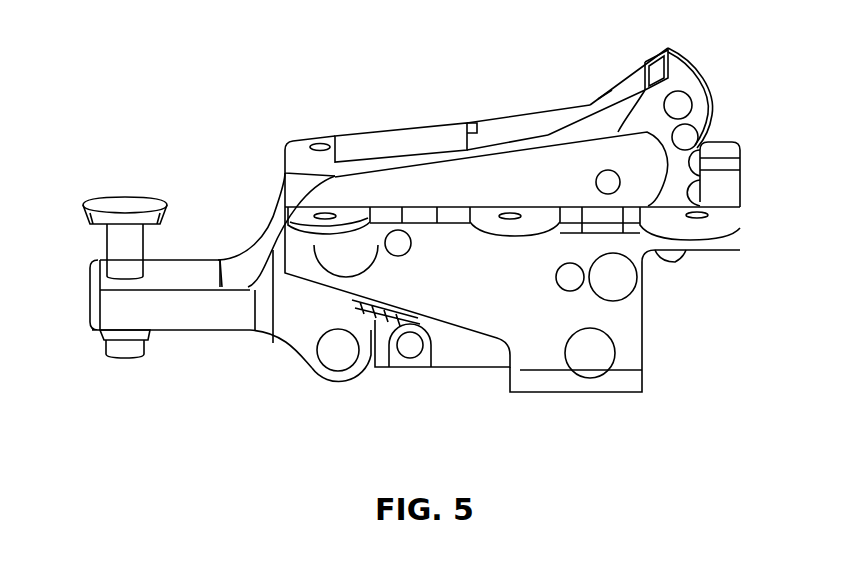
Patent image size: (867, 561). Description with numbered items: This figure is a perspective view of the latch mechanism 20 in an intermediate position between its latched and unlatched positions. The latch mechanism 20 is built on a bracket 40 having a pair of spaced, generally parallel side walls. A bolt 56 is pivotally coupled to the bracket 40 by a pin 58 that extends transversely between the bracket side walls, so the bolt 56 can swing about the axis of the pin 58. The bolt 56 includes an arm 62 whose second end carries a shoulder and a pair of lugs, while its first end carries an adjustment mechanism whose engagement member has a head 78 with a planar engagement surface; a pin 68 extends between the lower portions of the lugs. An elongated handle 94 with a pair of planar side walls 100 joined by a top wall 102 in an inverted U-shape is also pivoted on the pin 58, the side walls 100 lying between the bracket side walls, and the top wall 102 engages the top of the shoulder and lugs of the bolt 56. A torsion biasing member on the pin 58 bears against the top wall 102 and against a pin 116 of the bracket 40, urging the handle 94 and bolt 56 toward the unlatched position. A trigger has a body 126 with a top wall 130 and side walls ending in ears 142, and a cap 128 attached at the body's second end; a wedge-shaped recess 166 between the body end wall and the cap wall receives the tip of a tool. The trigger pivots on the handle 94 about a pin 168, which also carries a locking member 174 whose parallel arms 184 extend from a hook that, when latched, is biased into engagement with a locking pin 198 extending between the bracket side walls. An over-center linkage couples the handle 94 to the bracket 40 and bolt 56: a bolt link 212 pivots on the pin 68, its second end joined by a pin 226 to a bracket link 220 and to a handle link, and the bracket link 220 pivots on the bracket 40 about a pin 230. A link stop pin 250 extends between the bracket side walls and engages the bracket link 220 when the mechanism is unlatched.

The latch mechanism 20 is at (122, 108).
The bracket 40 is at (650, 342).
The bolt 56 is at (262, 343).
The pin 58 is at (348, 260).
The arm 62 is at (186, 325).
The pin 68 is at (338, 367).
The head 78 is at (163, 217).
The handle 94 is at (376, 127).
The side walls 100 is at (516, 168).
The top wall 102 is at (410, 140).
The pin 116 is at (398, 242).
The body 126 is at (620, 76).
The cap 128 is at (683, 70).
The top wall 130 is at (593, 107).
The ear 142 is at (703, 112).
The recess 166 is at (651, 65).
The pin 168 is at (607, 186).
The locking member 174 is at (678, 266).
The arms 184 is at (722, 143).
The locking pin 198 is at (613, 277).
The bolt link 212 is at (390, 360).
The bracket link 220 is at (460, 358).
The pin 226 is at (410, 346).
The pin 230 is at (597, 367).
The link stop pin 250 is at (560, 282).